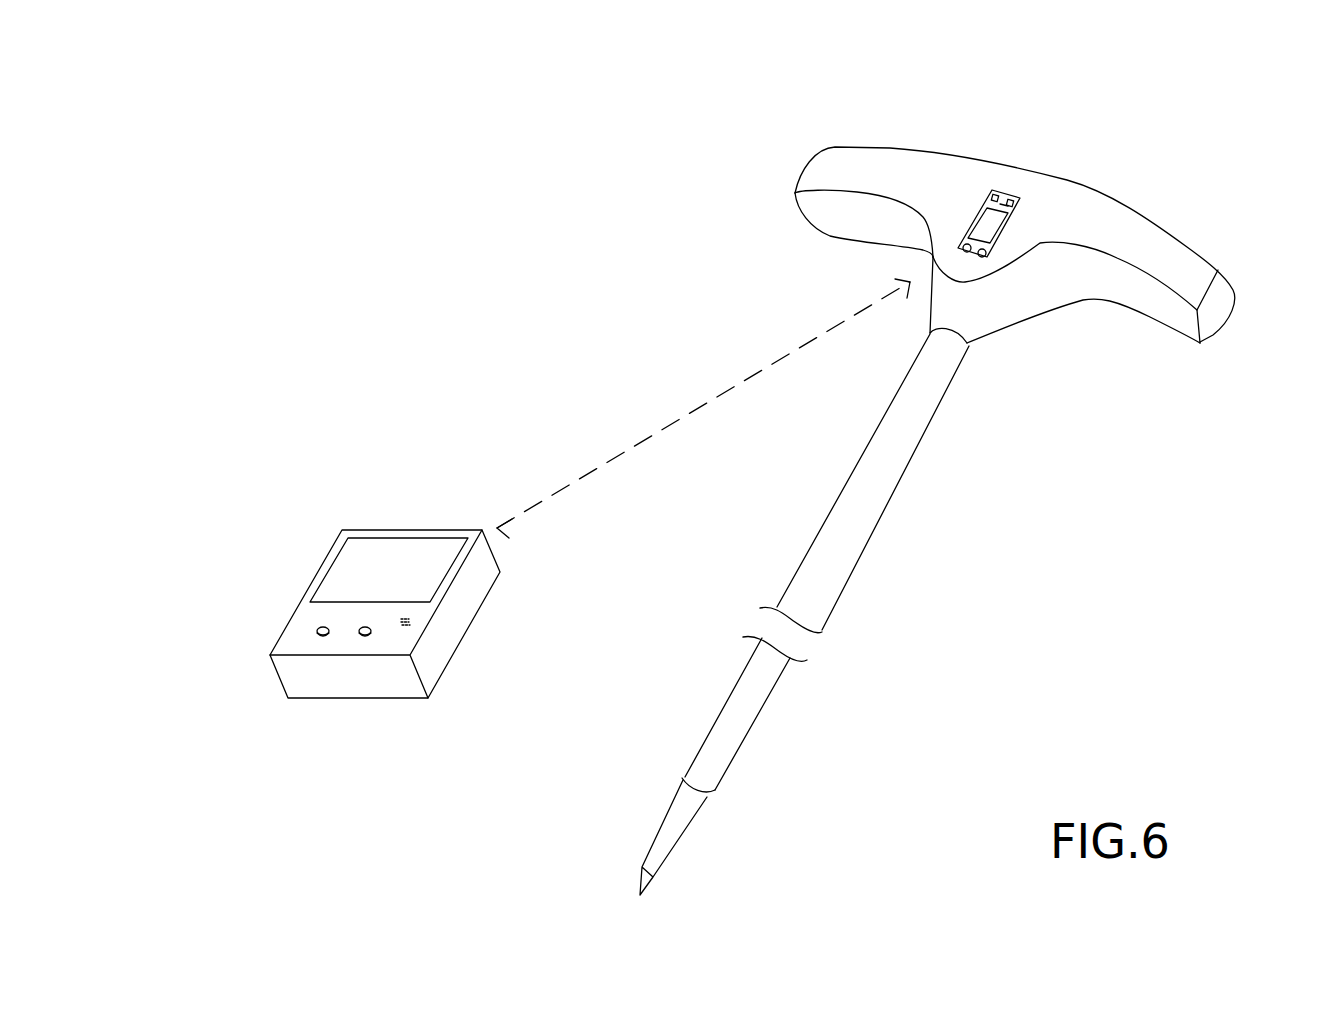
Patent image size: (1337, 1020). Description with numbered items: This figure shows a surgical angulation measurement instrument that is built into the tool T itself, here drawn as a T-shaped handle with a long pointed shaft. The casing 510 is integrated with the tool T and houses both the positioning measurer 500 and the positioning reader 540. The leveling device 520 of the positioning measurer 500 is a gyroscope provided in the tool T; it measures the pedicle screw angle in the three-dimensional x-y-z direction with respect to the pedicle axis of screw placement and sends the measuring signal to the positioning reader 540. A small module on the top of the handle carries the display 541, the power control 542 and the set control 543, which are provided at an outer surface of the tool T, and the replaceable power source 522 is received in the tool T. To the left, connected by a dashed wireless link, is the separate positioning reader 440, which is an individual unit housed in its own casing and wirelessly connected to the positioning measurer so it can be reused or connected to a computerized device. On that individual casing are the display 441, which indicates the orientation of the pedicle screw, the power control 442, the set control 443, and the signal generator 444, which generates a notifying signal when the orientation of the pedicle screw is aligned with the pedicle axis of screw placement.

The positioning measurer 500 is at (1007, 83).
The casing 510 is at (1087, 220).
The leveling device 520 is at (993, 190).
The power source 522 is at (995, 225).
The positioning reader 540 is at (1170, 412).
The display 541 is at (1008, 225).
The power control 542 is at (968, 253).
The set control 543 is at (985, 257).
The positioning reader 440 is at (468, 362).
The display 441 is at (442, 560).
The power control 442 is at (320, 630).
The set control 443 is at (363, 630).
The signal generator 444 is at (405, 617).